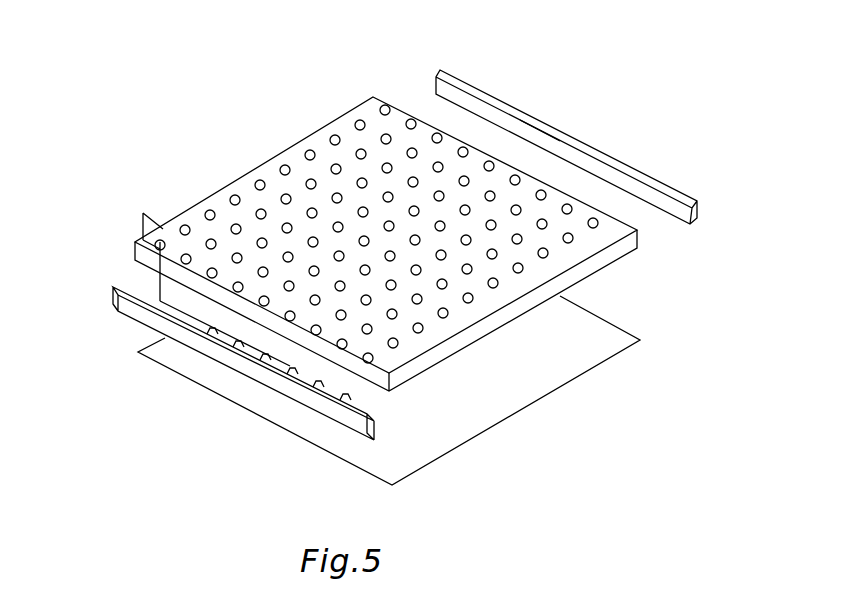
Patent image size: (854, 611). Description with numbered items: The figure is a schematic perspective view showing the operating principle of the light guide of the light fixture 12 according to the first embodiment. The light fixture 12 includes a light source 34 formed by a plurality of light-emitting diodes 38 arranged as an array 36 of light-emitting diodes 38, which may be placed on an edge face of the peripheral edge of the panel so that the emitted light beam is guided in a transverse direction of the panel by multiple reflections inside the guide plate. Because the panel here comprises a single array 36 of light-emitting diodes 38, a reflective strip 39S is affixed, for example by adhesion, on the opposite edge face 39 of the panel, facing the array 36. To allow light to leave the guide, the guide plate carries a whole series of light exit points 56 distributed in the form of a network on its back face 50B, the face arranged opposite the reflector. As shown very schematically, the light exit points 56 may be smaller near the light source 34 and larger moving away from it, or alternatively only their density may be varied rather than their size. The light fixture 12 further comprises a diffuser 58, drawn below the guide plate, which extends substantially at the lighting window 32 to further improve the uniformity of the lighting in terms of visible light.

The light fixture 12 is at (233, 113).
The lighting window 32 is at (622, 262).
The light source 34 is at (276, 380).
The array of light-emitting diodes 36 is at (165, 320).
The light-emitting diodes 38 is at (187, 320).
The opposite edge face 39 is at (433, 81).
The reflective strip 39S is at (540, 132).
The light exit points 56 is at (306, 148).
The back face of the guide plate 50B is at (487, 290).
The diffuser 58 is at (437, 415).